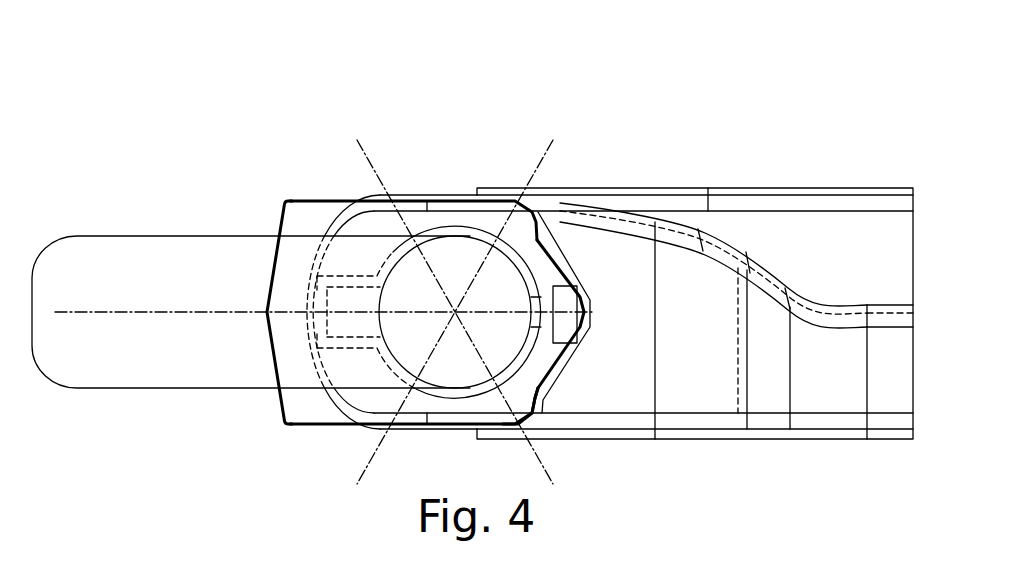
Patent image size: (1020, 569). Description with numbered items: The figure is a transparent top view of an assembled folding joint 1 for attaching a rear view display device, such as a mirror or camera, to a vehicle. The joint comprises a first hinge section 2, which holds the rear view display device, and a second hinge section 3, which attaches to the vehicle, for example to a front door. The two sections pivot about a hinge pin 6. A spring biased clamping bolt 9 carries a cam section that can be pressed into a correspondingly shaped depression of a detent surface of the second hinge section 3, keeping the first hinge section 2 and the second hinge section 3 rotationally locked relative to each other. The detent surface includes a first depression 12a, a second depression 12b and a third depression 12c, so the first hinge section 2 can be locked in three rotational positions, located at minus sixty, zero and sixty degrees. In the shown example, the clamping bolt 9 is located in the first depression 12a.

The folding joint 1 is at (588, 92).
The first hinge section 2 is at (133, 270).
The second hinge section 3 is at (716, 297).
The hinge pin 6 is at (456, 272).
The clamping bolt 9 is at (561, 327).
The first depression 12a is at (597, 340).
The second depression 12b is at (594, 303).
The third depression 12c is at (546, 407).